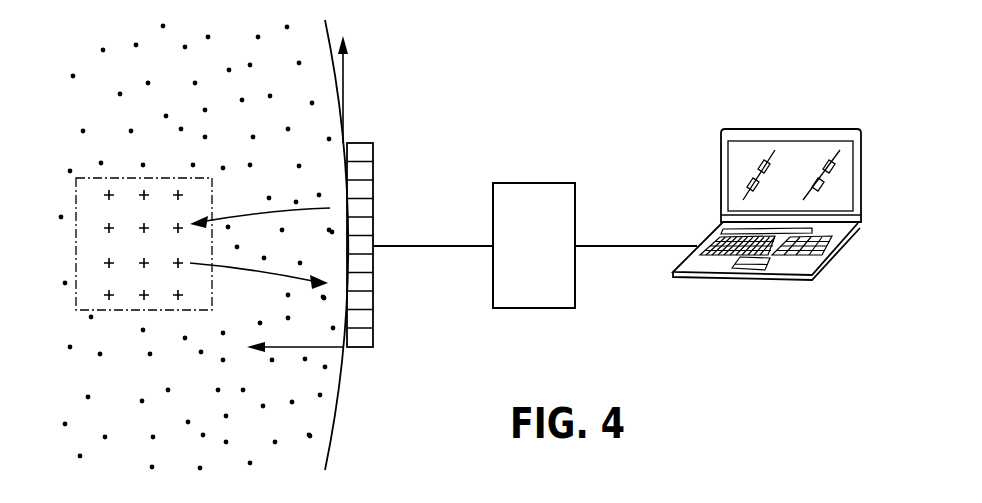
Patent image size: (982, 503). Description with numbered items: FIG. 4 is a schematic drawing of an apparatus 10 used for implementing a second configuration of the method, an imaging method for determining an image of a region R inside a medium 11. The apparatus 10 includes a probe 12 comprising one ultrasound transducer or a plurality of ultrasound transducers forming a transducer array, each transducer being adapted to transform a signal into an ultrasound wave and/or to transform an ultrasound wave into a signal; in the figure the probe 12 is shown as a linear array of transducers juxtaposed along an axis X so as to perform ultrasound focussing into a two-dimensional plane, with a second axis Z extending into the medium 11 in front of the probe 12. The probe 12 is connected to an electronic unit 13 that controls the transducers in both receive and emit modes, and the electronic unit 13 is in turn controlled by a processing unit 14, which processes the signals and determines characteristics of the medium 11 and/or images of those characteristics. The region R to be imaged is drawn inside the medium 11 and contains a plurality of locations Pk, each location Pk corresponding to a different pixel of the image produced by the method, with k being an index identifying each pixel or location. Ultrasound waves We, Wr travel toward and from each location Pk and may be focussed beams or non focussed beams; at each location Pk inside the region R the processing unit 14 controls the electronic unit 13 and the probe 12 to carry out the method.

The apparatus 10 is at (580, 64).
The medium 11 is at (317, 411).
The probe 12 is at (373, 338).
The electronic unit 13 is at (553, 308).
The processing unit 14 is at (785, 277).
The region R is at (72, 193).
The location Pk is at (108, 263).
The emitted ultrasound wave We is at (260, 207).
The received ultrasound wave Wr is at (259, 285).
The axis X is at (353, 89).
The Z axis Z is at (295, 362).